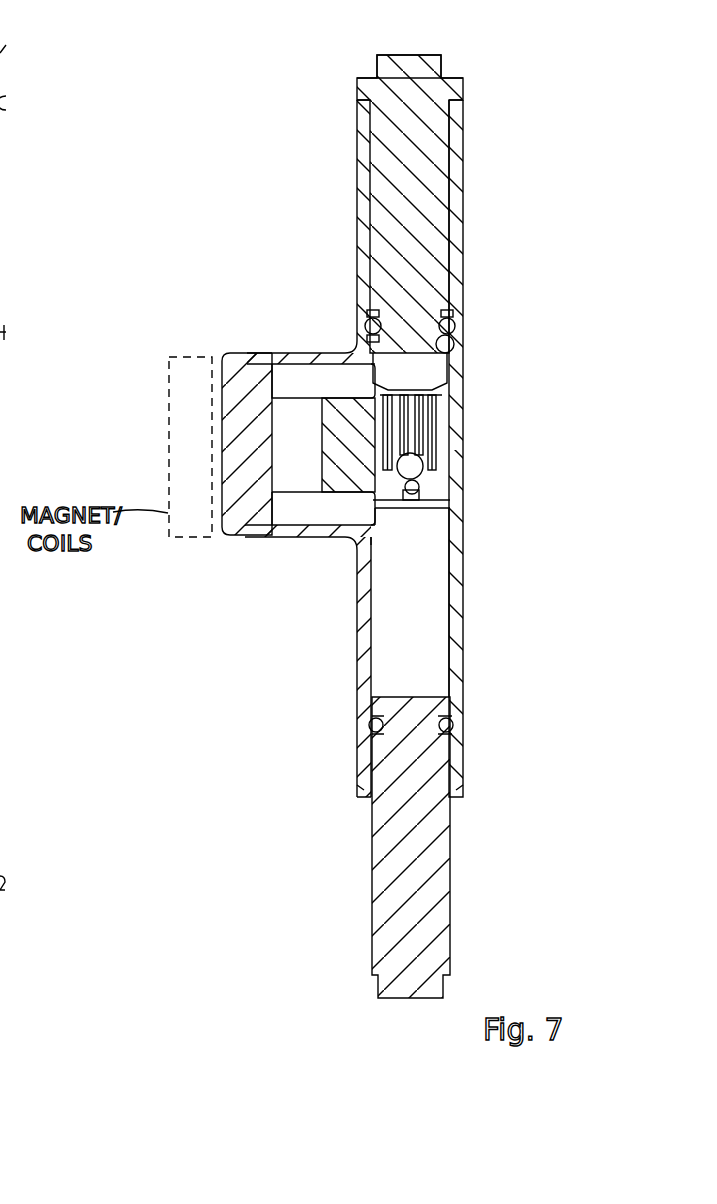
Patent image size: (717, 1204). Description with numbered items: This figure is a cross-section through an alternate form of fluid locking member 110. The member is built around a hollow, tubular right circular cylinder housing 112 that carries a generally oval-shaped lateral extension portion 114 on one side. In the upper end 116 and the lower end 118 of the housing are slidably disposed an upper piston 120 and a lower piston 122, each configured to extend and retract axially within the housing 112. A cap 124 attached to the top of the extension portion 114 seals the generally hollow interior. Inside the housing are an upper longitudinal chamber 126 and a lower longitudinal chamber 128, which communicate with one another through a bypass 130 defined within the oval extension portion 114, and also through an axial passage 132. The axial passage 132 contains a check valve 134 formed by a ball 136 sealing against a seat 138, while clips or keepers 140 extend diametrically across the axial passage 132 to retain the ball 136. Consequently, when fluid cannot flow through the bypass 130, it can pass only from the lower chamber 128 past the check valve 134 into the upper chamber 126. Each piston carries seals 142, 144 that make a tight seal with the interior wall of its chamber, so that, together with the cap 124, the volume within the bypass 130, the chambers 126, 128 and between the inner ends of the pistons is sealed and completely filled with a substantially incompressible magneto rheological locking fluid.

The locking member 110 is at (240, 153).
The housing 112 is at (357, 198).
The lateral extension portion 114 is at (262, 540).
The upper end of the housing 116 is at (357, 103).
The lower end of the housing 118 is at (355, 798).
The piston 120 is at (348, 73).
The piston 122 is at (362, 978).
The cap 124 is at (222, 400).
The upper longitudinal chamber 126 is at (430, 381).
The lower longitudinal chamber 128 is at (422, 603).
The bypass 130 is at (290, 376).
The axial passage 132 is at (440, 441).
The check valve 134 is at (368, 468).
The ball 136 is at (440, 461).
The seat 138 is at (440, 500).
The clips or keepers 140 is at (395, 382).
The seals 142 is at (352, 313).
The seals 144 is at (354, 739).